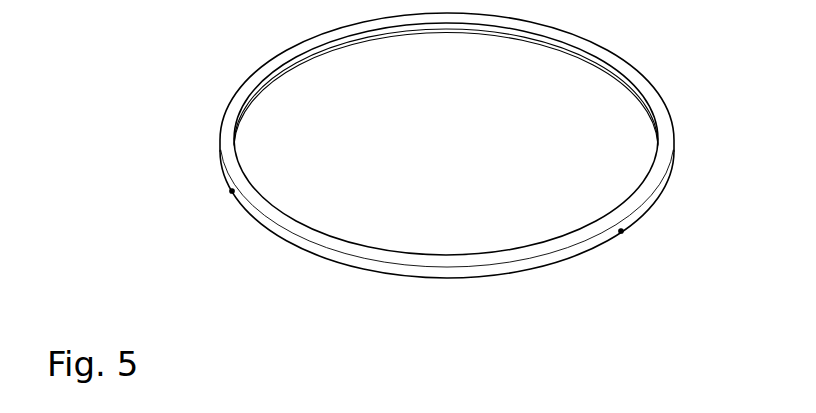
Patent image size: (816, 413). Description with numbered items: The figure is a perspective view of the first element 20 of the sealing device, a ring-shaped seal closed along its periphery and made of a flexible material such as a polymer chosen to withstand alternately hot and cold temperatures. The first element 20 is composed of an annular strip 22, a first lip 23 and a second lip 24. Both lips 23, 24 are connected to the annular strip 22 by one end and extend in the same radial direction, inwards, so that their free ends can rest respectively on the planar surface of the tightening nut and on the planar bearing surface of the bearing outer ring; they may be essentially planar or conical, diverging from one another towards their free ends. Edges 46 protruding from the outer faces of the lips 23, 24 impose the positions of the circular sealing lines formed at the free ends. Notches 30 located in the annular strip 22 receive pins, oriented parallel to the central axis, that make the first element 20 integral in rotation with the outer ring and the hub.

The first element 20 is at (461, 144).
The annular strip 22 is at (655, 203).
The first lip 23 is at (637, 198).
The second lip 24 is at (588, 77).
The notches 30 is at (232, 191).
The edges 46 is at (614, 60).